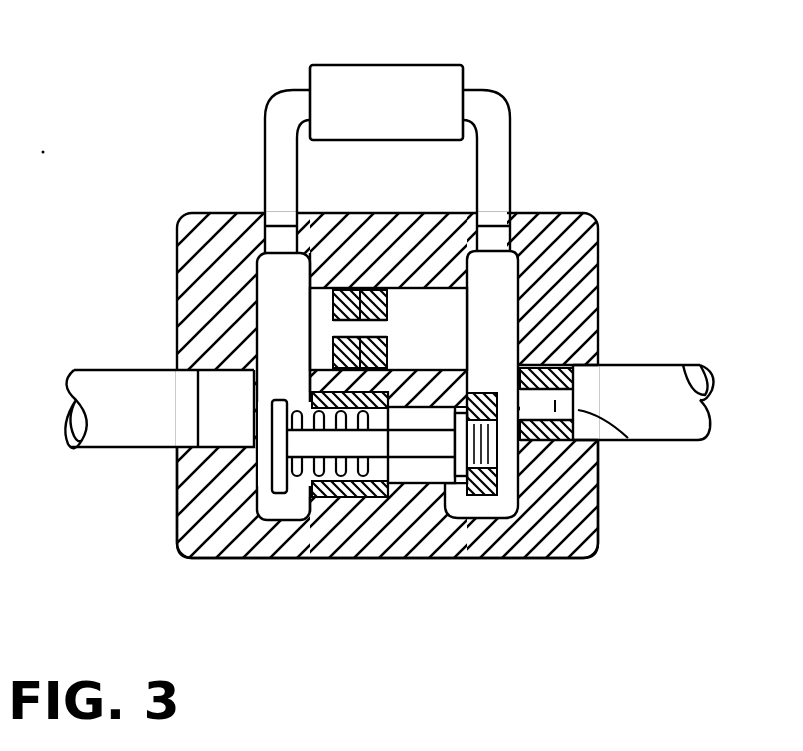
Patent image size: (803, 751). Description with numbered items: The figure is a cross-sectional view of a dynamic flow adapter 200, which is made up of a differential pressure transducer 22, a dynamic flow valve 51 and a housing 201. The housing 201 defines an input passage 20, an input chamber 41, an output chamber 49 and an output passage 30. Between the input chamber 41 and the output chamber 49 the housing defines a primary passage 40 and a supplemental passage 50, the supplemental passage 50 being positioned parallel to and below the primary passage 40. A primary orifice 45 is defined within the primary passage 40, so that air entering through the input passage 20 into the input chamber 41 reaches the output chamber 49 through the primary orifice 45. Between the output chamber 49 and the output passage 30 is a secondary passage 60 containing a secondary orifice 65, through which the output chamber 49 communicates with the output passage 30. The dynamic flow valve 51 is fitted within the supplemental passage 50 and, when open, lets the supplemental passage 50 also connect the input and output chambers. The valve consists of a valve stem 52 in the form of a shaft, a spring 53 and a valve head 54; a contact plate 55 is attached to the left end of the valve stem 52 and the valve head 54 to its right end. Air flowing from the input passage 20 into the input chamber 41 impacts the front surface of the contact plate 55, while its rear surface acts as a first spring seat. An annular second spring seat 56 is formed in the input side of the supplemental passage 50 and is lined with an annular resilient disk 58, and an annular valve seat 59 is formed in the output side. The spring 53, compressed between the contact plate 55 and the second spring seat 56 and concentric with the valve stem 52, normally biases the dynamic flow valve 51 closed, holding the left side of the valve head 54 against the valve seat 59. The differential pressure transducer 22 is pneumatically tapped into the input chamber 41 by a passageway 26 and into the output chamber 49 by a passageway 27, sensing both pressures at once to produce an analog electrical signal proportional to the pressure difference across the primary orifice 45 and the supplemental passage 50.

The dynamic flow adapter 200 is at (574, 110).
The housing 201 is at (596, 213).
The differential pressure transducer 22 is at (467, 82).
The passageway 26 is at (266, 228).
The passageway 27 is at (497, 232).
The primary orifice 45 is at (362, 290).
The second spring seat 56 is at (386, 335).
The primary passage 40 is at (320, 334).
The input chamber 41 is at (272, 290).
The output chamber 49 is at (500, 300).
The output passage 30 is at (588, 383).
The secondary orifice 65 is at (568, 455).
The secondary passage 60 is at (617, 419).
The input passage 20 is at (215, 420).
The contact plate 55 is at (275, 465).
The dynamic flow valve 51 is at (252, 501).
The spring 53 is at (303, 472).
The valve stem 52 is at (320, 440).
The resilient disk 58 is at (350, 494).
The supplemental passage 50 is at (422, 468).
The valve seat 59 is at (455, 470).
The valve head 54 is at (465, 483).